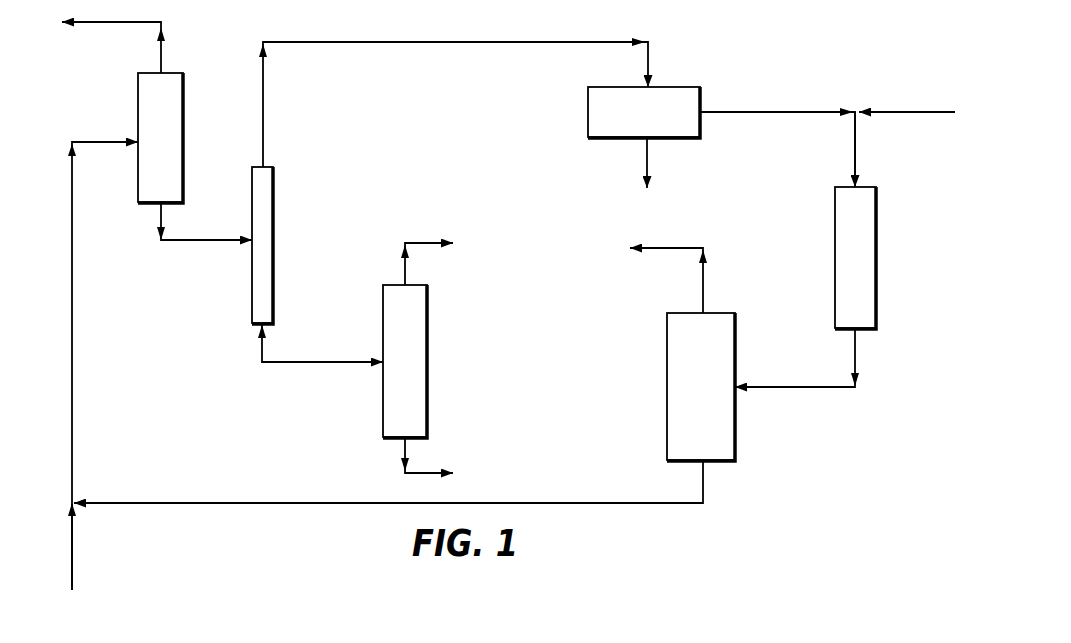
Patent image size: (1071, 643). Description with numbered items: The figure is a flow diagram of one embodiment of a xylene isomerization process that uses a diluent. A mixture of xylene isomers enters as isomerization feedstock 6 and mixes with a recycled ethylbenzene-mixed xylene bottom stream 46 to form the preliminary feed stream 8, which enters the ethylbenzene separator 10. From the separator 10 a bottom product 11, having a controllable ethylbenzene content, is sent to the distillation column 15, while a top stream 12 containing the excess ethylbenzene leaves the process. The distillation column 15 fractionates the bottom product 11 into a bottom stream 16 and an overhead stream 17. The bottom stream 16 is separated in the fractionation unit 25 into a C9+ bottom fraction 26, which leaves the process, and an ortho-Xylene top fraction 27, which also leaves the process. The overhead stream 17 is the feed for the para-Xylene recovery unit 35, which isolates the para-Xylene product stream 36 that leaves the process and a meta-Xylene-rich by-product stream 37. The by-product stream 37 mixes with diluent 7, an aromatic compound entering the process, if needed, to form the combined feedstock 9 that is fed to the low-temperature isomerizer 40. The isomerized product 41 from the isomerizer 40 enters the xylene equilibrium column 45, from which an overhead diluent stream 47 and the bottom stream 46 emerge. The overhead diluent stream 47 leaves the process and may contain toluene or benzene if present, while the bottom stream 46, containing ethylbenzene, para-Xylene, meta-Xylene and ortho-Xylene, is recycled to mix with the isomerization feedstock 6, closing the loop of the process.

The isomerization feedstock 6 is at (73, 521).
The diluent 7 is at (912, 113).
The preliminary feed stream 8 is at (108, 143).
The combined feedstock 9 is at (857, 143).
The ethylbenzene separator 10 is at (183, 128).
The bottom product 11 is at (195, 242).
The top stream 12 is at (171, 40).
The distillation column 15 is at (273, 205).
The bottom stream 16 is at (305, 364).
The overhead stream 17 is at (264, 130).
The fractionation unit 25 is at (427, 360).
The C9+ bottom fraction 26 is at (422, 473).
The ortho-Xylene top fraction 27 is at (425, 243).
The para-Xylene recovery unit 35 is at (588, 98).
The para-Xylene product stream 36 is at (645, 160).
The meta-Xylene-rich by-product stream 37 is at (715, 108).
The low-temperature isomerizer 40 is at (876, 278).
The isomerized product 41 is at (857, 360).
The xylene equilibrium column 45 is at (667, 423).
The bottom stream 46 is at (230, 502).
The overhead diluent stream 47 is at (705, 285).